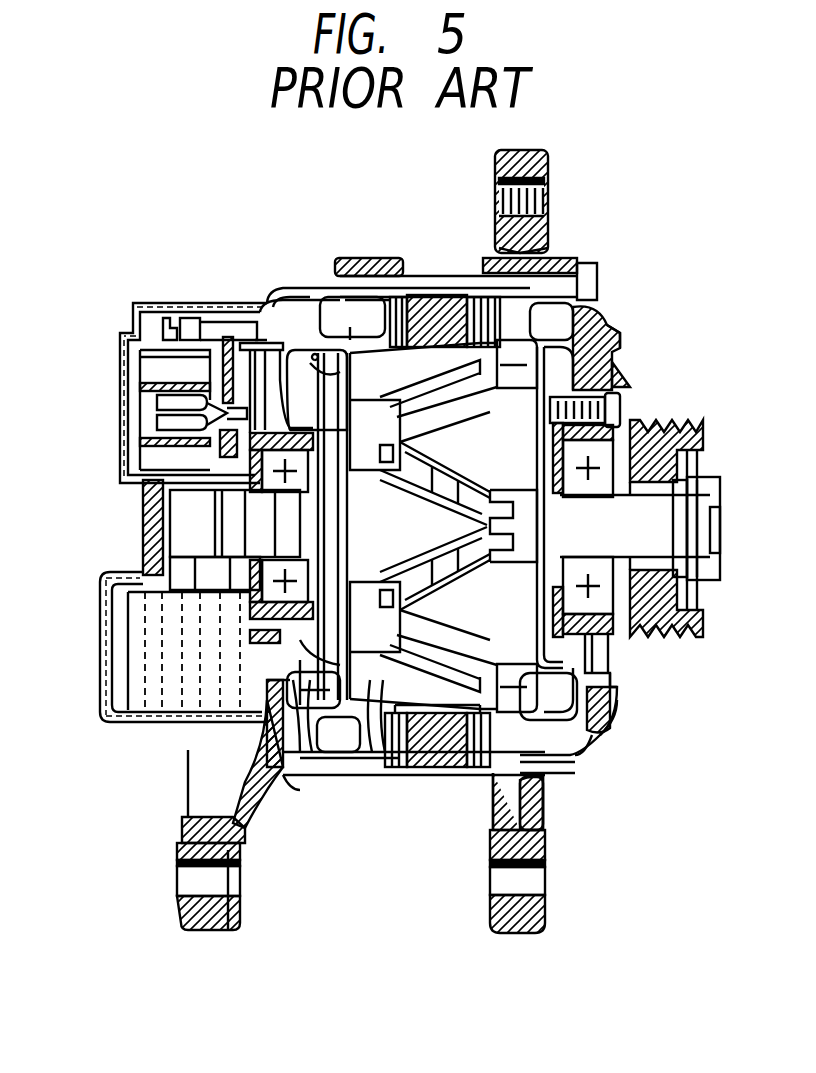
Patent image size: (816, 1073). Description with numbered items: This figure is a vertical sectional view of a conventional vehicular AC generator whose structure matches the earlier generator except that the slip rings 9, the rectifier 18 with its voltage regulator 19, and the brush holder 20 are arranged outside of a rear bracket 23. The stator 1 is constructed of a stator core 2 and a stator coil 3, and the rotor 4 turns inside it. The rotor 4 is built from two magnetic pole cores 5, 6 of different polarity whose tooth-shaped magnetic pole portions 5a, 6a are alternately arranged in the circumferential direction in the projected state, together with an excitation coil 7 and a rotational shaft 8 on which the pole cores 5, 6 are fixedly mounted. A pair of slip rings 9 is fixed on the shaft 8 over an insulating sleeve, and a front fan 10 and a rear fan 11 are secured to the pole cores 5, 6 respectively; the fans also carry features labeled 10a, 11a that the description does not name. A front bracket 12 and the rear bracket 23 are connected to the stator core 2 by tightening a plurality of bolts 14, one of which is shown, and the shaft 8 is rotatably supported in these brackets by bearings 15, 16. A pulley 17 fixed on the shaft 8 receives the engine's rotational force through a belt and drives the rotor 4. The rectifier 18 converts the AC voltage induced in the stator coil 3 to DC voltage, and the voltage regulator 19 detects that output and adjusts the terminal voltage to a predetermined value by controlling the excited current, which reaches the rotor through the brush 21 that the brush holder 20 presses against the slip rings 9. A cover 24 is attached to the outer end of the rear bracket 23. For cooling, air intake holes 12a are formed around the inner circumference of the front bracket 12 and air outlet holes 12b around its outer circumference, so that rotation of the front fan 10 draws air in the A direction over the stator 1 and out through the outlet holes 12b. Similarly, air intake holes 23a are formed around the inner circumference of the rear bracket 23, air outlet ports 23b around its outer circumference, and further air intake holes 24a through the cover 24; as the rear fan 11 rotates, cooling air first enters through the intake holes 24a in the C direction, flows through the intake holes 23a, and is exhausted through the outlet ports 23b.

The stator 1 is at (428, 186).
The stator core 2 is at (418, 300).
The stator coil 3 is at (367, 315).
The rotor 4 is at (480, 821).
The magnetic pole core 5 is at (478, 765).
The tooth-shaped magnetic pole portion 5a is at (455, 760).
The magnetic pole core 6 is at (375, 770).
The tooth-shaped magnetic pole portion 6a is at (405, 765).
The excitation coil 7 is at (425, 760).
The rotational shaft 8 is at (646, 630).
The slip rings 9 is at (165, 522).
The fan 10 is at (545, 782).
The lug 10a is at (588, 760).
The fan 11 is at (345, 770).
The fan air flow 11a is at (570, 315).
The front bracket 12 is at (608, 328).
The air intake holes 12a is at (603, 365).
The air outlet holes 12b is at (598, 735).
The bolts 14 is at (583, 268).
The bearing 15 is at (650, 430).
The bearing 16 is at (258, 575).
The pulley 17 is at (665, 640).
The rectifier 18 is at (138, 420).
The voltage regulator 19 is at (120, 668).
The brush holder 20 is at (218, 728).
The brush 21 is at (192, 728).
The rear bracket 23 is at (282, 290).
The air intake holes 23a is at (170, 383).
The air outlet ports 23b is at (297, 292).
The cover 24 is at (168, 303).
The air intake holes 24a is at (160, 453).